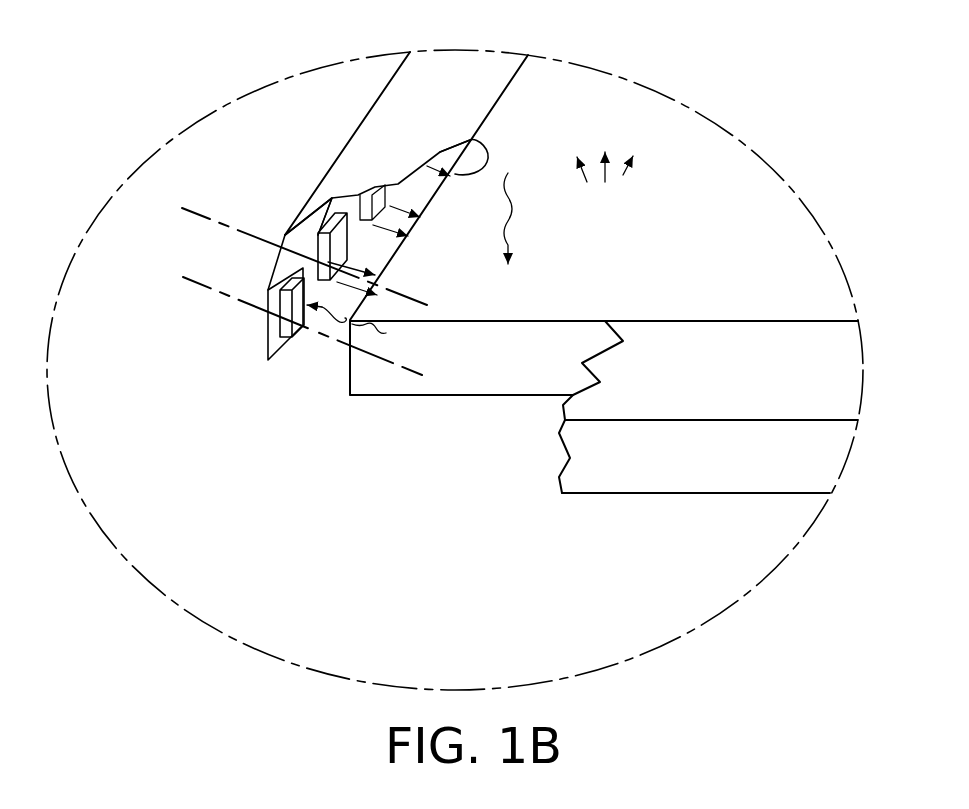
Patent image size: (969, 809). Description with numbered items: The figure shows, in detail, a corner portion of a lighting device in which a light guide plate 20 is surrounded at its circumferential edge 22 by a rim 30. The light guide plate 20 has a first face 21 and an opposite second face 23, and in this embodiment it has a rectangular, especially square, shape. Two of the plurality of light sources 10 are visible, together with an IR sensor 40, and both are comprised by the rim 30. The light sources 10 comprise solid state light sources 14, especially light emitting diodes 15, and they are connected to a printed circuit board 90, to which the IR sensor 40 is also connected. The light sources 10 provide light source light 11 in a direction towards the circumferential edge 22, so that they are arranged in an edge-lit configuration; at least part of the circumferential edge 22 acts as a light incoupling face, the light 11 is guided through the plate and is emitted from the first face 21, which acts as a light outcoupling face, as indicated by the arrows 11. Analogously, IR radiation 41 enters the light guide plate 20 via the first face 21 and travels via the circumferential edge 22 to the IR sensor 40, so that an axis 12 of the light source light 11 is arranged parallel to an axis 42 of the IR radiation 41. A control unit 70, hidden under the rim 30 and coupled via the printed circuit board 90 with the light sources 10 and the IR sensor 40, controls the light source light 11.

The light sources 10 is at (336, 253).
The light source light 11 is at (401, 203).
The axis of the light source light 12 is at (202, 216).
The solid state light sources 14 is at (320, 230).
The light emitting diodes 15 is at (318, 258).
The light guide plate 20 is at (698, 270).
The first face 21 is at (577, 293).
The circumferential edge 22 is at (392, 373).
The second face 23 is at (475, 398).
The rim 30 is at (480, 108).
The IR sensor 40 is at (303, 328).
The IR radiation 41 is at (345, 318).
The axis of radiation of the IR radiation 42 is at (196, 282).
The control unit 70 is at (477, 141).
The printed circuit board 90 is at (278, 312).